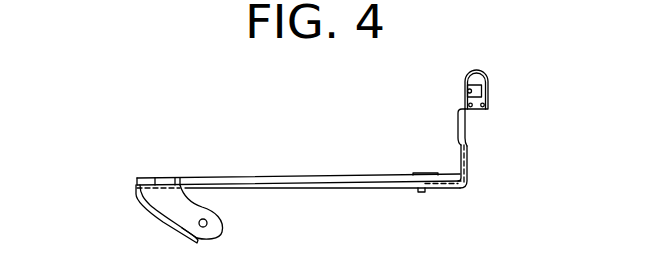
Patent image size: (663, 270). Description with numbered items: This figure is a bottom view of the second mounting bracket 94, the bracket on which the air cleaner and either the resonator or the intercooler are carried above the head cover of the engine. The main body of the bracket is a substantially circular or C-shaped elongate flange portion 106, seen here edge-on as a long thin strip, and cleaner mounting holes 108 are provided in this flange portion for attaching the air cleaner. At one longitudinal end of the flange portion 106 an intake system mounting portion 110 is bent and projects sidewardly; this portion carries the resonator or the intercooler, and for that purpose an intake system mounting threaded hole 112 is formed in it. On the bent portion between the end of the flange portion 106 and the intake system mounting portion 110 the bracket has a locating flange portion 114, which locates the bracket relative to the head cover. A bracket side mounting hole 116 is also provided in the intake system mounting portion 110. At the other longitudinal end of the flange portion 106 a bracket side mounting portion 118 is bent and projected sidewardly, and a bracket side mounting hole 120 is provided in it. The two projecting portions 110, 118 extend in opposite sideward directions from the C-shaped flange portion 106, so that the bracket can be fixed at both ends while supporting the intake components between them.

The second mounting bracket 94 is at (522, 143).
The elongate flange portion 106 is at (282, 177).
The cleaner mounting hole 108 is at (172, 177).
The intake system mounting portion 110 is at (488, 93).
The intake system mounting threaded hole 112 is at (466, 92).
The locating flange portion 114 is at (468, 177).
The bracket side mounting hole 116 is at (452, 124).
The bracket side mounting portion 118 is at (192, 208).
The bracket side mounting hole 120 is at (182, 233).